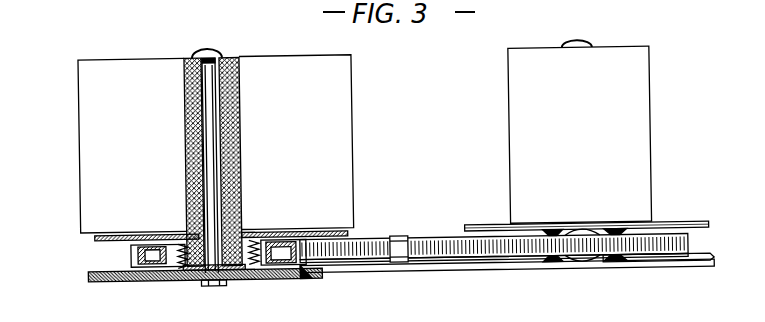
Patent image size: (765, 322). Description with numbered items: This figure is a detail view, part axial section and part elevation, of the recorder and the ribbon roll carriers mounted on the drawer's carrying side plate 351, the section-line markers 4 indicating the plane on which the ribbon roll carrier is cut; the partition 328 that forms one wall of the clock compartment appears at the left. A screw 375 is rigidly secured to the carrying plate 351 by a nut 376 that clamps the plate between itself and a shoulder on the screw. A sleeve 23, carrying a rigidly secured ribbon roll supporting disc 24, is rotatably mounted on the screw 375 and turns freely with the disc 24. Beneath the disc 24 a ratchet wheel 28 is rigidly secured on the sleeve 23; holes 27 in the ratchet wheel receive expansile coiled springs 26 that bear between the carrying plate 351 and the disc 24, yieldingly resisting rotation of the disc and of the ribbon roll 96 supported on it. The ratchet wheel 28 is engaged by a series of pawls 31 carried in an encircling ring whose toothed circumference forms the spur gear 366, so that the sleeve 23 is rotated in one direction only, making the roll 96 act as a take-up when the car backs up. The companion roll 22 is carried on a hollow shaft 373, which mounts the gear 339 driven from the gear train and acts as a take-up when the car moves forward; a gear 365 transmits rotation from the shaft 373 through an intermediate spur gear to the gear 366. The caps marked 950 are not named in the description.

The button/cap 950 is at (143, 54).
The ribbon roll 96 is at (355, 100).
The sleeve 23 is at (244, 106).
The screw 375 is at (212, 136).
The expansile coiled springs 26 is at (184, 232).
The ribbon roll supporting disc 24 is at (114, 236).
The partition 328 is at (181, 268).
The holes 27 is at (268, 274).
The ratchet wheel 28 is at (201, 273).
The spur gear 366 is at (318, 271).
The nut 376 is at (221, 280).
The pawls 31 is at (303, 276).
The carrying side plate 351 is at (440, 270).
The gear 365 is at (383, 239).
The ribbon roll 22 is at (642, 122).
The hollow shaft 373 is at (575, 235).
The gear 339 is at (666, 257).
The section line 4 is at (218, 281).